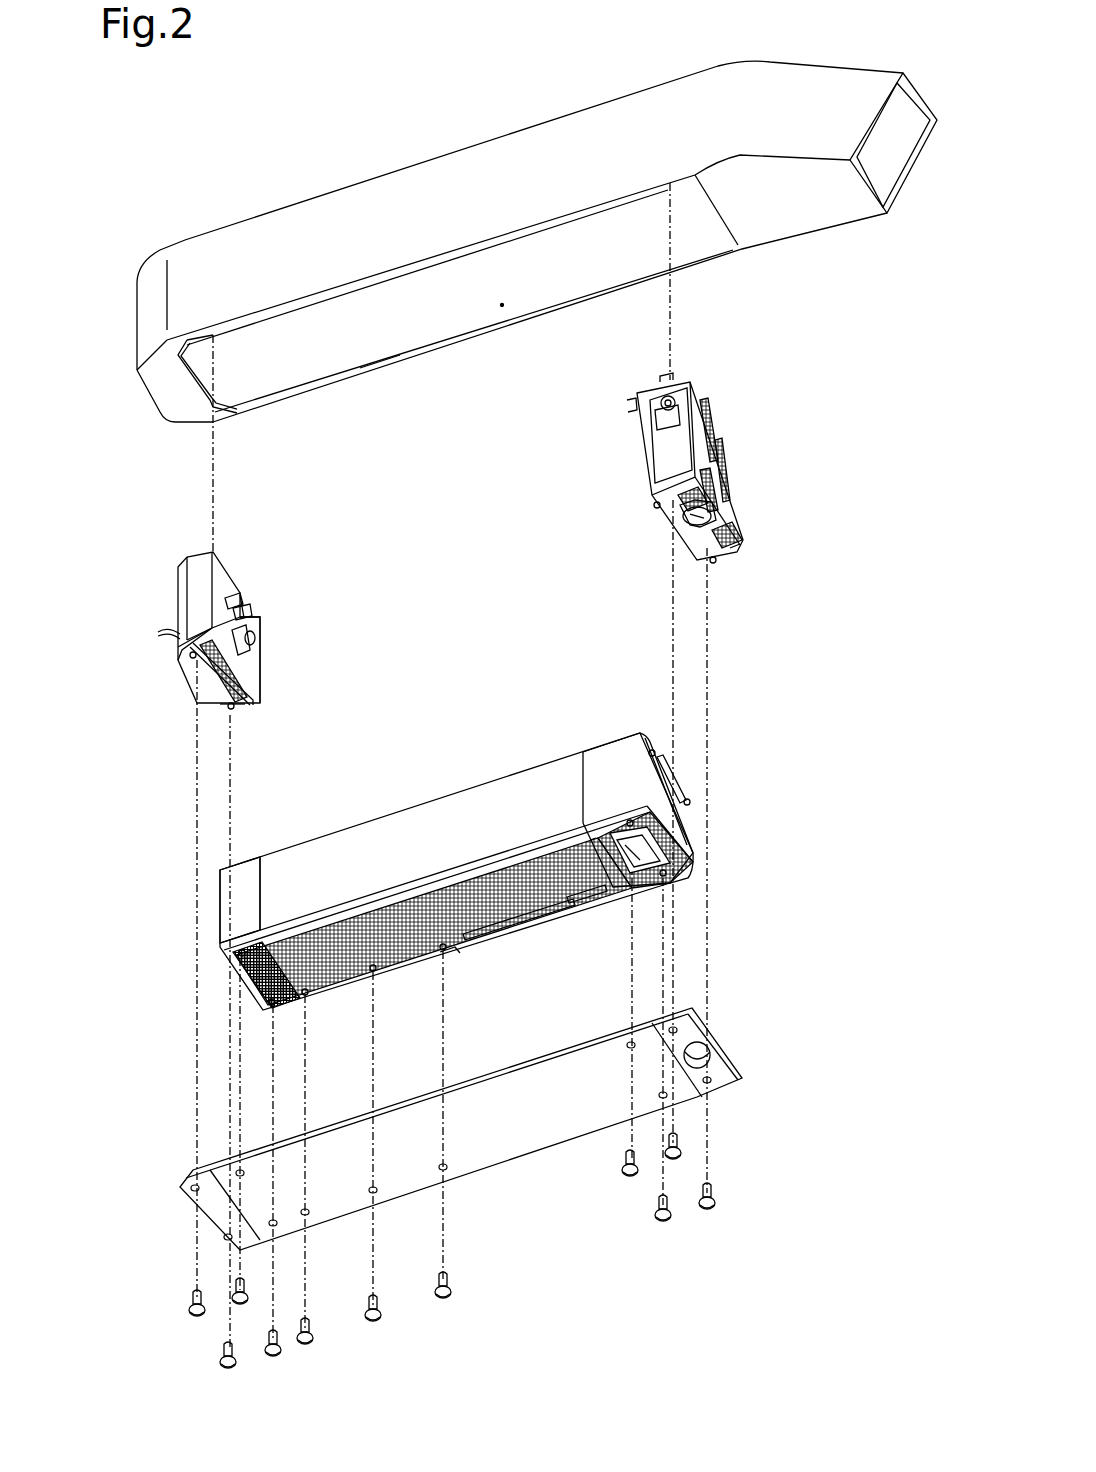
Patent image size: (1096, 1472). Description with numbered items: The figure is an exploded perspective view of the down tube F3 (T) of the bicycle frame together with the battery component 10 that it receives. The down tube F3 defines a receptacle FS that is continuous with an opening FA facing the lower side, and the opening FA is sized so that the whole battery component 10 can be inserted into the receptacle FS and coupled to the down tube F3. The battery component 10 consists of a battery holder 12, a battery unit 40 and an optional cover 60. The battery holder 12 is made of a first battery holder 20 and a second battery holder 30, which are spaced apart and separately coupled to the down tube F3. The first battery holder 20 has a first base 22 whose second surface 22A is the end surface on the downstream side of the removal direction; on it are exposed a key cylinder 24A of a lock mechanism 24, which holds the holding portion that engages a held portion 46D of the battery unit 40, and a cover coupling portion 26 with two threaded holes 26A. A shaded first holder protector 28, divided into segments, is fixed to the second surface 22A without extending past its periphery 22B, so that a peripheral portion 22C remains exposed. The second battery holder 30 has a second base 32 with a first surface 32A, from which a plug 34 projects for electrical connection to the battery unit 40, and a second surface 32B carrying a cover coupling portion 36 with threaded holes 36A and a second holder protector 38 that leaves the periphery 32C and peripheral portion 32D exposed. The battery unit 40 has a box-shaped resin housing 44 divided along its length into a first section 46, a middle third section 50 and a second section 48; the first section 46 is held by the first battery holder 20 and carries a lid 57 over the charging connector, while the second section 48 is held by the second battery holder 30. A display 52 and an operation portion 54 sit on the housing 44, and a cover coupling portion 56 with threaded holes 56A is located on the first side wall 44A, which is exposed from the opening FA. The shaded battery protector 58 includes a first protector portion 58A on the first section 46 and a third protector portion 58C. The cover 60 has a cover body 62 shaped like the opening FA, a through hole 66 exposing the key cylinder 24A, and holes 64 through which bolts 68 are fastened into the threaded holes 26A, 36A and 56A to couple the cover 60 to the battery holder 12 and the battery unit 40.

The battery component 10 is at (910, 342).
The down tube F3 is at (537, 233).
The tubular member T is at (590, 106).
The receptacle FS is at (503, 308).
The opening FA is at (378, 360).
The first battery holder 20 is at (685, 463).
The battery holder 12 is at (685, 463).
The first base 22 is at (737, 432).
The second surface 22A is at (716, 566).
The periphery 22B is at (741, 560).
The peripheral portion 22C is at (655, 505).
The key cylinder 24A is at (772, 505).
The lock mechanism 24 is at (717, 507).
The threaded holes 26A is at (608, 522).
The cover coupling portion 26 is at (686, 513).
The first holder protector 28 is at (708, 492).
The second battery holder 30 is at (187, 625).
The second base 32 is at (178, 592).
The first surface 32A is at (260, 672).
The second surface 32B is at (234, 718).
The periphery 32C is at (244, 600).
The peripheral portion 32D is at (190, 647).
The plug 34 is at (255, 613).
The threaded holes 36A is at (136, 674).
The cover coupling portion 36 is at (215, 708).
The second holder protector 38 is at (243, 708).
The battery unit 40 is at (454, 832).
The housing 44 is at (533, 773).
The first side wall 44A is at (456, 962).
The first section 46 is at (616, 738).
The held portion 46D is at (666, 758).
The second section 48 is at (241, 866).
The third section 50 is at (403, 816).
The display 52 is at (523, 928).
The operation portion 54 is at (593, 908).
The threaded holes 56A is at (408, 1005).
The cover coupling portion 56 is at (443, 960).
The lid 57 is at (670, 860).
The battery protector 58 is at (464, 932).
The first protector portion 58A is at (665, 838).
The third protector portion 58C is at (478, 882).
The cover 60 is at (455, 1145).
The cover body 62 is at (557, 1048).
The holes 64 is at (230, 1245).
The through hole 66 is at (708, 1052).
The bolts 68 is at (226, 1372).